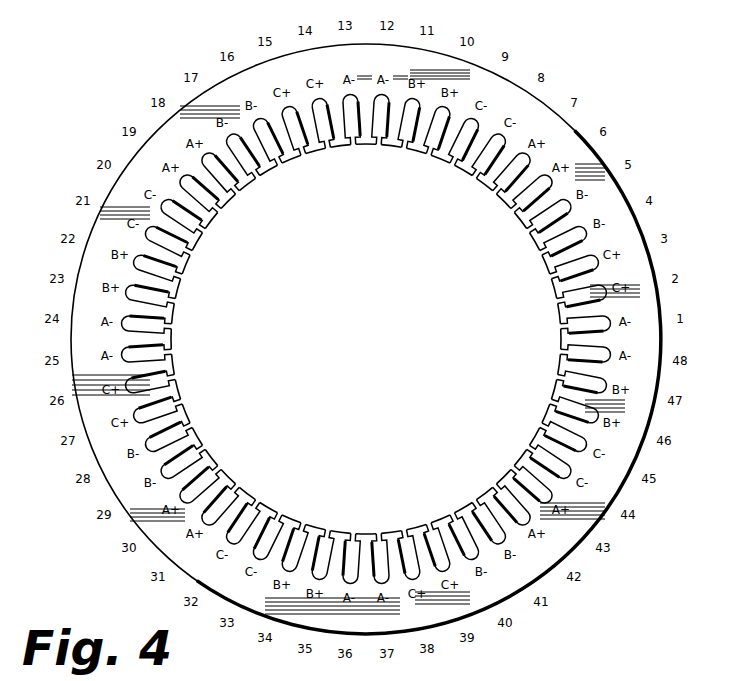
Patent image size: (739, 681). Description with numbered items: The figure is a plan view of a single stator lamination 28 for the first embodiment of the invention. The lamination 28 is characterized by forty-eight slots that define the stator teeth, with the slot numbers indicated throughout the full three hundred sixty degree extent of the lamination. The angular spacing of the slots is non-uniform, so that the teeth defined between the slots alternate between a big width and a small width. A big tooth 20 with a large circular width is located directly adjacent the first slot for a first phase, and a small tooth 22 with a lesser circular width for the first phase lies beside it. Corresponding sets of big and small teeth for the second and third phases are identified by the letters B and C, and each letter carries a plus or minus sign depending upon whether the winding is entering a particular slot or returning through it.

The big tooth 20 is at (288, 160).
The small tooth 22 is at (263, 172).
The stator lamination 28 is at (623, 492).